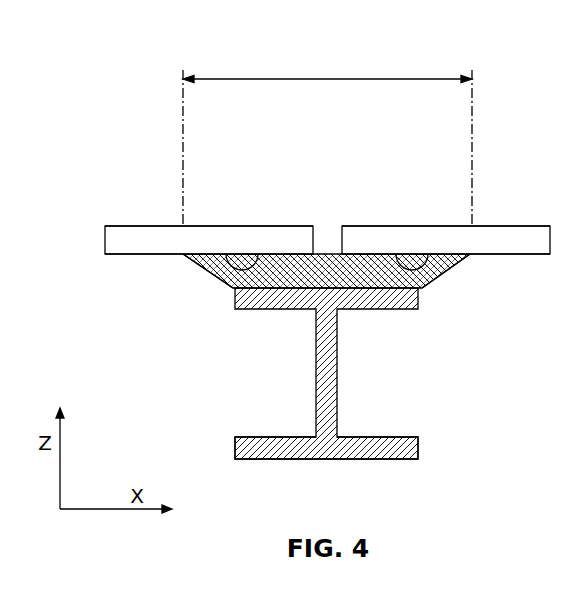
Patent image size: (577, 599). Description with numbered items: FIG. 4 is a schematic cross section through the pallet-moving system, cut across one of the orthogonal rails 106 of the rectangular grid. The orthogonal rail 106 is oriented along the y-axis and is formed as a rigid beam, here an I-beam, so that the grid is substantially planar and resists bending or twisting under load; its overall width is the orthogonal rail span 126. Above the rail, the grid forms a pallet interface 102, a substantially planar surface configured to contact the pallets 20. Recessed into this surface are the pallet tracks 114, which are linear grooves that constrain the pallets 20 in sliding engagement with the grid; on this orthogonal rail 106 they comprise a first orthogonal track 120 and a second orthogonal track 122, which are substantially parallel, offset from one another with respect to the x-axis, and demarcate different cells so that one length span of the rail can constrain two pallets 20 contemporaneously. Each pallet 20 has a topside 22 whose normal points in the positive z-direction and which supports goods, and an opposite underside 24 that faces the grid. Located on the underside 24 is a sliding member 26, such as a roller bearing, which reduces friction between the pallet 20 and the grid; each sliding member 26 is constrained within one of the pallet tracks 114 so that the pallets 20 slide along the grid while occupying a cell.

The pallet 20 is at (263, 237).
The topside 22 is at (158, 225).
The underside 24 is at (157, 256).
The sliding member 26 is at (243, 260).
The pallet interface 102 is at (319, 257).
The orthogonal rail 106 is at (278, 450).
The pallet track 114 is at (148, 321).
The first orthogonal track 120 is at (231, 282).
The second orthogonal track 122 is at (427, 282).
The orthogonal rail span 126 is at (327, 77).